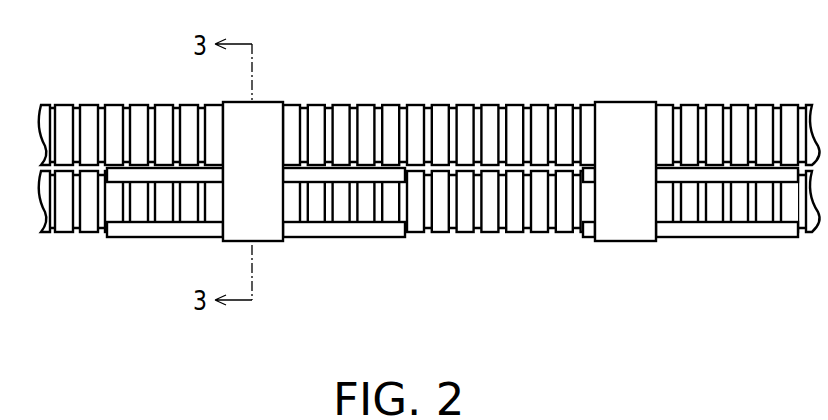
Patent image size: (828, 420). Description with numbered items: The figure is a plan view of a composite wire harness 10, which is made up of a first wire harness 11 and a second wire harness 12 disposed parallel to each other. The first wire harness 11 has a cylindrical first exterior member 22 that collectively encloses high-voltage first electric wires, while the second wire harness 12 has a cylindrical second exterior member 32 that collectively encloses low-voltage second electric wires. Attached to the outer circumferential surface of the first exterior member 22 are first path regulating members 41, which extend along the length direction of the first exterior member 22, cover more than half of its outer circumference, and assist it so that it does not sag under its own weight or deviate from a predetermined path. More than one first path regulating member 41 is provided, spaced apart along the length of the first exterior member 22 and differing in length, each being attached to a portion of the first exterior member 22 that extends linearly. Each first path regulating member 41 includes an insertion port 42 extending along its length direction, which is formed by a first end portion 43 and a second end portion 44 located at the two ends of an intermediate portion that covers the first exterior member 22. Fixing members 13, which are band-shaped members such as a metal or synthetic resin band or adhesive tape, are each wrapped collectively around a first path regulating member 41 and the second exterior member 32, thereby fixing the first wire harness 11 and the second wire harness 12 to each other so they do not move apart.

The composite wire harness 10 is at (712, 32).
The first wire harness 11 is at (429, 232).
The second wire harness 12 is at (429, 108).
The fixing member 13 is at (274, 103).
The first exterior member 22 is at (488, 224).
The second exterior member 32 is at (489, 106).
The first path regulating member 41 is at (452, 238).
The insertion port 42 is at (365, 215).
The first end portion 43 is at (324, 224).
The second end portion 44 is at (300, 178).